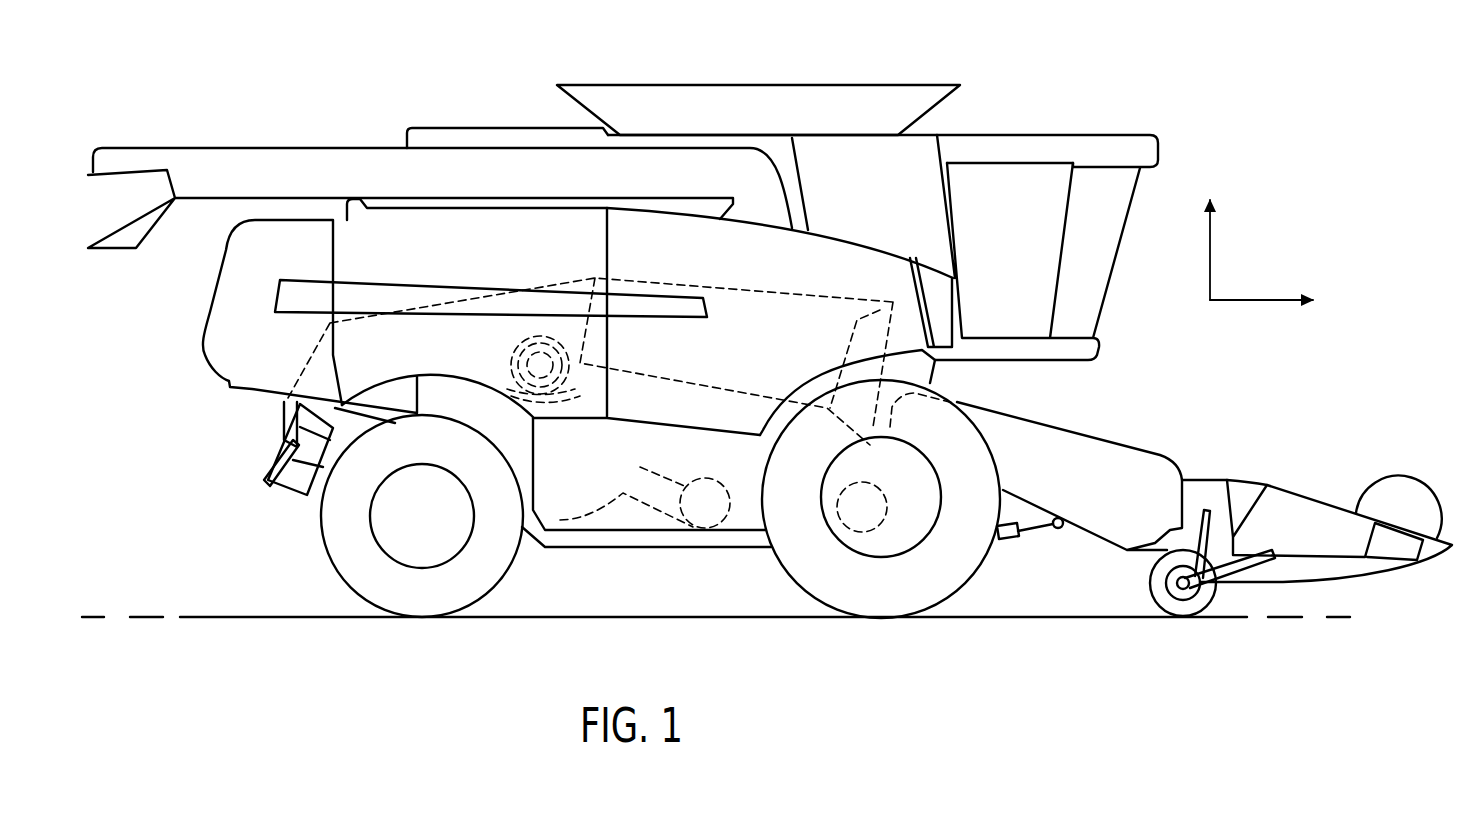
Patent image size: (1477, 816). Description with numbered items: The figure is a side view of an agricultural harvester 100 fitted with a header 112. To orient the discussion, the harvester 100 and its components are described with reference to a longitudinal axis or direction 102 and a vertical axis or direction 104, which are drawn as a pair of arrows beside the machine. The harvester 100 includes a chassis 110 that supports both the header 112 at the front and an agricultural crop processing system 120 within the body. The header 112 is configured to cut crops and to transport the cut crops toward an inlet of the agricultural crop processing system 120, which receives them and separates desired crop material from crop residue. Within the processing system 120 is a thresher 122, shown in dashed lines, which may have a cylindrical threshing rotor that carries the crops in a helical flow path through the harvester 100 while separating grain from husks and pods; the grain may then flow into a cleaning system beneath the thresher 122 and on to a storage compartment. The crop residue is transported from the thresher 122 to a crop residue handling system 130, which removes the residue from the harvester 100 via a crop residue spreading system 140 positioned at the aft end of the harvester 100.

The harvester 100 is at (1160, 37).
The longitudinal axis or direction 102 is at (1257, 300).
The vertical axis or direction 104 is at (1210, 255).
The chassis 110 is at (583, 553).
The header 112 is at (1360, 458).
The agricultural crop processing system 120 is at (750, 272).
The thresher 122 is at (758, 300).
The crop residue handling system 130 is at (471, 281).
The crop residue spreading system 140 is at (266, 460).